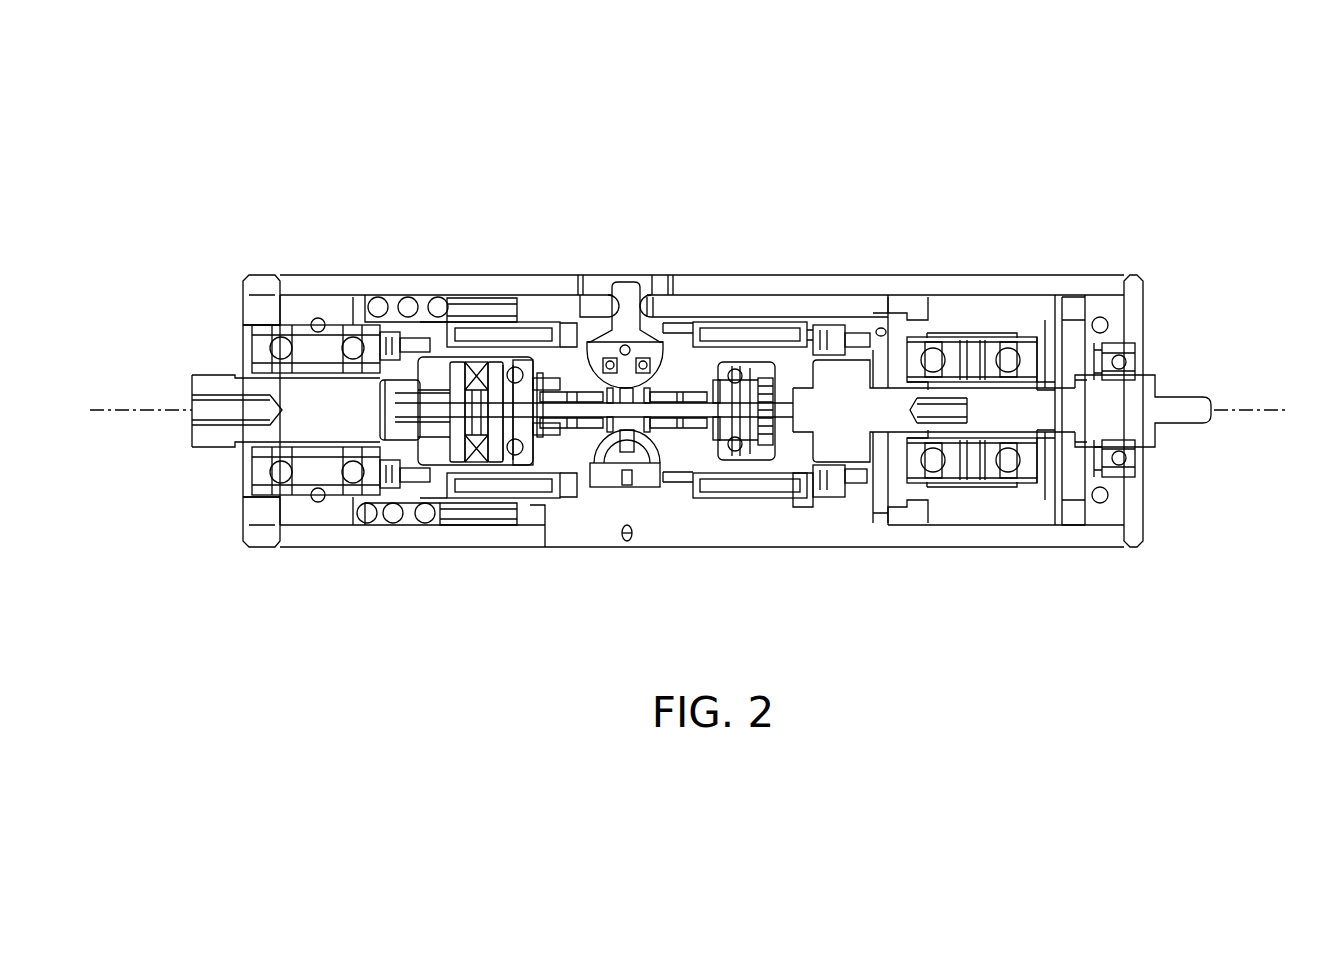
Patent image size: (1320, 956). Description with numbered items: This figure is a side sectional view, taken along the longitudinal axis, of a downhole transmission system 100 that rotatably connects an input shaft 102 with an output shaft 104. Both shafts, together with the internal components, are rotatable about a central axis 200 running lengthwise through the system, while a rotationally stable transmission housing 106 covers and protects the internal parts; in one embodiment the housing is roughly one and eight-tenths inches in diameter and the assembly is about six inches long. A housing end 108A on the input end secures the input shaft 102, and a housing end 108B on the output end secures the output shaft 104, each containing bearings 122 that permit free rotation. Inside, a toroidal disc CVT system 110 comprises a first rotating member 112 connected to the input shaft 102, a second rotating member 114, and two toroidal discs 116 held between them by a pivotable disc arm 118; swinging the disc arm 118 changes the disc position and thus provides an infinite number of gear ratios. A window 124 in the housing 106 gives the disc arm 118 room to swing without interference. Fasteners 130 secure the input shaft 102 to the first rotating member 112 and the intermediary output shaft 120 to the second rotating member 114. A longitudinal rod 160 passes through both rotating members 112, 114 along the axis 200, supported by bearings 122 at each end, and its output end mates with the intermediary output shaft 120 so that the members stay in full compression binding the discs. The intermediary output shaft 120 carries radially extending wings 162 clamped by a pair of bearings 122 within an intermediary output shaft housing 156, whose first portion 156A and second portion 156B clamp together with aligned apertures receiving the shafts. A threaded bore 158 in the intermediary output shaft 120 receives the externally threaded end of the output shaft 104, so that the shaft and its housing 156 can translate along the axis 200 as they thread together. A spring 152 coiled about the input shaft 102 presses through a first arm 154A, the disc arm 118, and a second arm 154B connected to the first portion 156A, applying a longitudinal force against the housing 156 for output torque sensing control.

The transmission system 100 is at (430, 137).
The input shaft 102 is at (210, 385).
The output shaft 104 is at (1147, 393).
The transmission housing 106 is at (322, 287).
The housing end 108A is at (263, 290).
The housing end 108B is at (1130, 292).
The CVT system 110 is at (631, 268).
The first rotating member 112 is at (545, 463).
The second rotating member 114 is at (700, 443).
The toroidal discs 116 is at (600, 343).
The disc arm 118 is at (622, 297).
The intermediary output shaft 120 is at (887, 413).
The bearings 122 is at (282, 506).
The window 124 is at (662, 280).
The fasteners 130 is at (823, 342).
The spring 152 is at (412, 303).
The first arm 154A is at (500, 305).
The second arm 154B is at (732, 300).
The intermediary output shaft housing 156 is at (970, 285).
The first portion 156A is at (940, 310).
The second portion 156B is at (1037, 317).
The bore 158 is at (950, 410).
The longitudinal rod 160 is at (585, 412).
The wings 162 is at (780, 421).
The central axis 200 is at (142, 410).